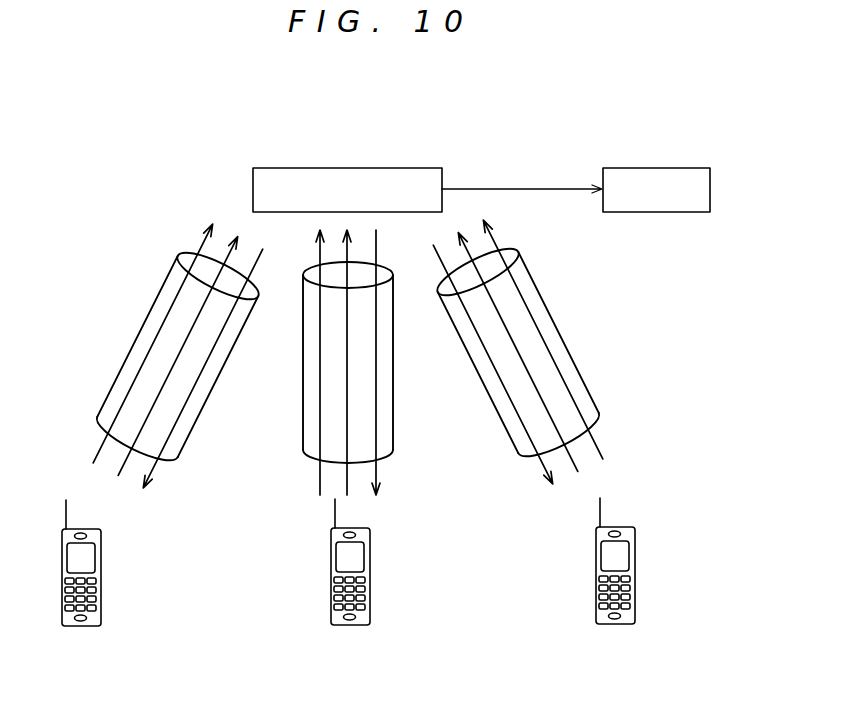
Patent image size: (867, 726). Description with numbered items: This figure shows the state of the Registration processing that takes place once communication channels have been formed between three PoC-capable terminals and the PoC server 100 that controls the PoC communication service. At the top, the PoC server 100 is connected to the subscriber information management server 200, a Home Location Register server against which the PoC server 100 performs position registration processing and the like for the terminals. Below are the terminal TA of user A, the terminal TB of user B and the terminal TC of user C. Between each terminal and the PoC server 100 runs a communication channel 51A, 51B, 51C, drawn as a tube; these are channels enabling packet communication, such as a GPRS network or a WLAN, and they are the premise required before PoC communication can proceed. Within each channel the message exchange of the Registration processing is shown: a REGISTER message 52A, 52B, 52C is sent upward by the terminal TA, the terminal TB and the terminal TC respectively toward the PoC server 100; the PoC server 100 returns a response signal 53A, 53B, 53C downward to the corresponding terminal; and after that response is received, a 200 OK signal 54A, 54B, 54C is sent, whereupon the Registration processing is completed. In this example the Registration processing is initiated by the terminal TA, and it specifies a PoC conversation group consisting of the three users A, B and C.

The PoC server 100 is at (313, 168).
The subscriber information management server 200 is at (673, 168).
The communication channel 51A is at (538, 290).
The REGISTER message 52A is at (518, 353).
The response signal 53A is at (507, 398).
The 200 OK signal 54A is at (567, 390).
The communication channel 51B is at (393, 357).
The REGISTER message 52B is at (347, 364).
The response signal 53B is at (376, 466).
The 200 OK signal 54B is at (320, 476).
The communication channel 51C is at (158, 292).
The REGISTER message 52C is at (175, 355).
The response signal 53C is at (177, 422).
The 200 OK signal 54C is at (132, 390).
The terminal TA is at (635, 590).
The terminal TB is at (370, 591).
The terminal TC is at (101, 592).